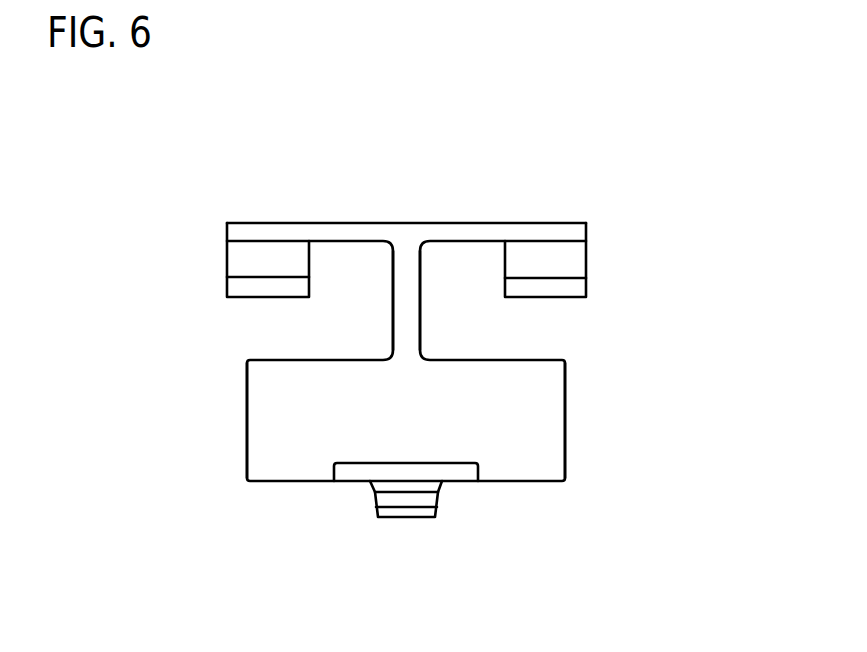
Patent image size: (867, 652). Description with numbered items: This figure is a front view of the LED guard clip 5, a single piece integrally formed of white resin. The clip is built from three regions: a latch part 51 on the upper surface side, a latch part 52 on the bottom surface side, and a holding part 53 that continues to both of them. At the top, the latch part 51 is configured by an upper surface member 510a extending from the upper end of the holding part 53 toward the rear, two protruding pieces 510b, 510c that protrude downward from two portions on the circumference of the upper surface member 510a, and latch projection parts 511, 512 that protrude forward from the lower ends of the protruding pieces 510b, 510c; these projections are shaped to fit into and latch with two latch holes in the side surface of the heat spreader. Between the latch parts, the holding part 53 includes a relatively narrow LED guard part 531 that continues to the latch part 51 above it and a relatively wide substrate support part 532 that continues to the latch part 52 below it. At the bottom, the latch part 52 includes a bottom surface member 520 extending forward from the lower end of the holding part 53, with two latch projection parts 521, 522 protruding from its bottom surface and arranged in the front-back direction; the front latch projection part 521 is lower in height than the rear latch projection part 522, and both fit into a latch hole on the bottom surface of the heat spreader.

The LED guard clip 5 is at (657, 162).
The latch part 51 is at (283, 185).
The upper surface member 510a is at (408, 223).
The protruding piece 510b is at (227, 275).
The protruding piece 510c is at (572, 257).
The latch projection part 511 is at (258, 290).
The latch projection part 512 is at (555, 290).
The holding part 53 is at (718, 367).
The LED guard part 531 is at (407, 308).
The substrate support part 532 is at (517, 425).
The latch part 52 is at (327, 497).
The bottom surface member 520 is at (478, 473).
The latch projection part 521 is at (420, 492).
The latch projection part 522 is at (423, 512).